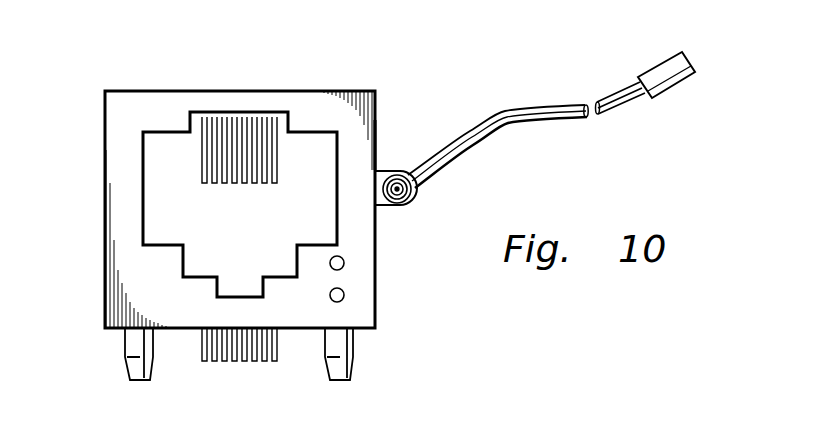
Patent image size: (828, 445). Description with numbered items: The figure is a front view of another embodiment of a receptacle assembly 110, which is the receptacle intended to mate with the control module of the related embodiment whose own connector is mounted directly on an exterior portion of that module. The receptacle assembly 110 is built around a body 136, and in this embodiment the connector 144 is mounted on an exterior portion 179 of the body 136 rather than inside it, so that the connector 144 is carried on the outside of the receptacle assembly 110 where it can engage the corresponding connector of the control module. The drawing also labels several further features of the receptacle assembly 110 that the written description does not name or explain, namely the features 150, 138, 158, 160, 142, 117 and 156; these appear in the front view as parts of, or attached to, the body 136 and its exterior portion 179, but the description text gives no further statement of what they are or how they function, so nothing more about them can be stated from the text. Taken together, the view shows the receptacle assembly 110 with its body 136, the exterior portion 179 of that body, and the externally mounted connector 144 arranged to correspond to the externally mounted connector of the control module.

The receptacle assembly 110 is at (138, 67).
The housing side wall 150 is at (113, 158).
The exterior portion 179 is at (376, 112).
The body 136 is at (386, 154).
The receptacle opening 138 is at (328, 200).
The contacts 158 is at (214, 185).
The terminal pins 160 is at (214, 362).
The mounting holes 142 is at (337, 263).
The connector 144 is at (415, 202).
The cable 117 is at (542, 106).
The plug 156 is at (660, 60).